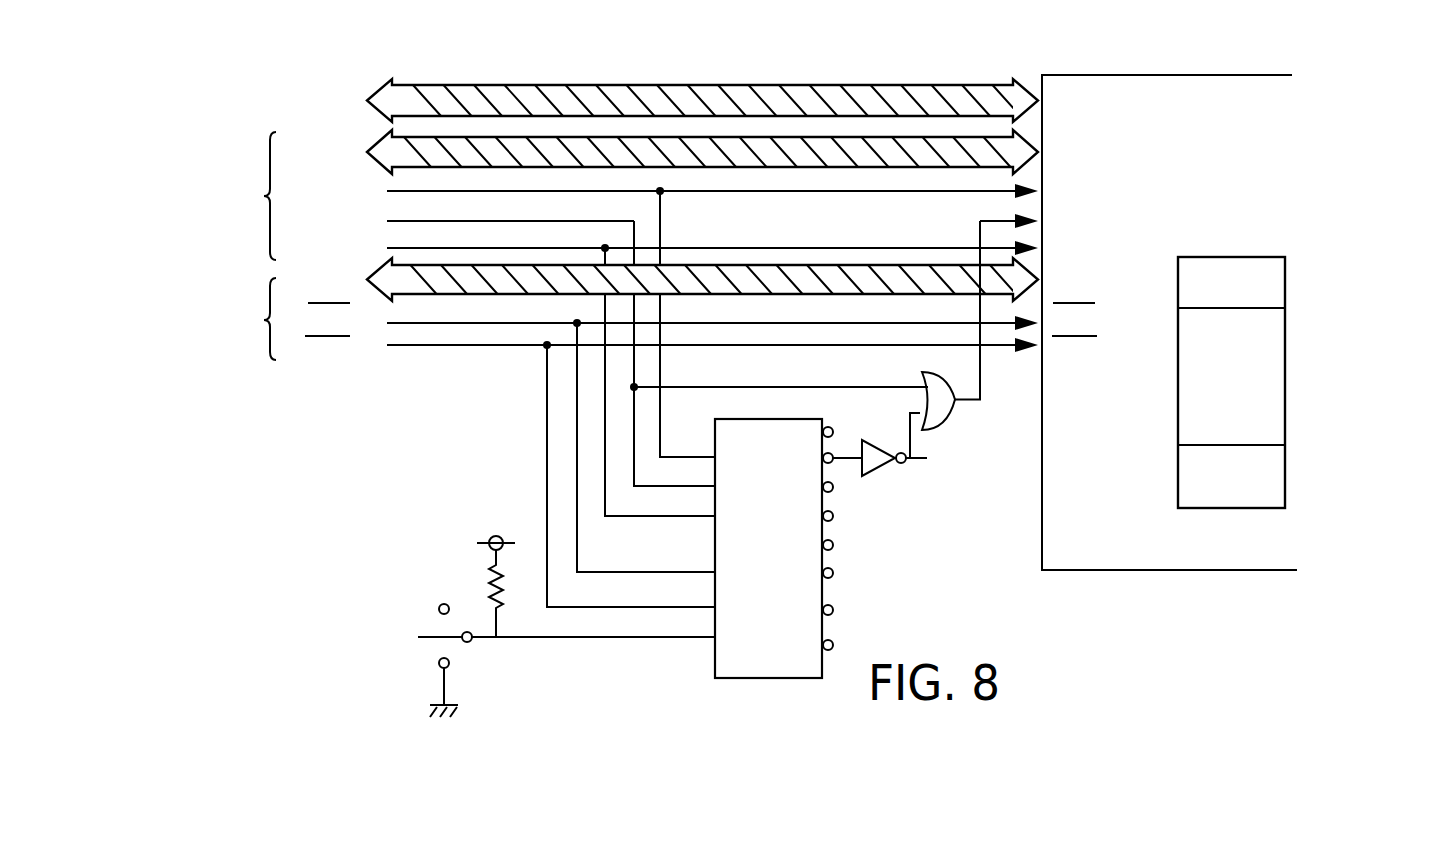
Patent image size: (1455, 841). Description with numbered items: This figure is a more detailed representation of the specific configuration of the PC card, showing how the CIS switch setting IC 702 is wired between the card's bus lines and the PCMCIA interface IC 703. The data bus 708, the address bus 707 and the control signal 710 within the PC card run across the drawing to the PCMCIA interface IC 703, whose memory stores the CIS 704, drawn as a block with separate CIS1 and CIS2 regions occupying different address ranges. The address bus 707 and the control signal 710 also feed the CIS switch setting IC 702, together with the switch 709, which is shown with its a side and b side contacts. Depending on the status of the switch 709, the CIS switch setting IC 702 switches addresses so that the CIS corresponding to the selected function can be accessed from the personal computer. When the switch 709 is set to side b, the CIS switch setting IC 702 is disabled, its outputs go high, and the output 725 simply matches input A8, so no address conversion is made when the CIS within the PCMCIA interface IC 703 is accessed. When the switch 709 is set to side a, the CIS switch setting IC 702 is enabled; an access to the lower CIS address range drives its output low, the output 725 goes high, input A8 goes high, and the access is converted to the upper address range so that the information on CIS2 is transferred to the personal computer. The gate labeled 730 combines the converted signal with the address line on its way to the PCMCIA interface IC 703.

The CIS switch setting IC 702 is at (774, 548).
The PCMCIA interface IC 703 is at (1169, 322).
The CIS 704 is at (1266, 257).
The address bus 707 is at (773, 85).
The data bus 708 is at (588, 323).
The switch 709 is at (554, 649).
The control signal 710 is at (591, 432).
The output 725 is at (904, 484).
The OR gate 730 is at (805, 339).